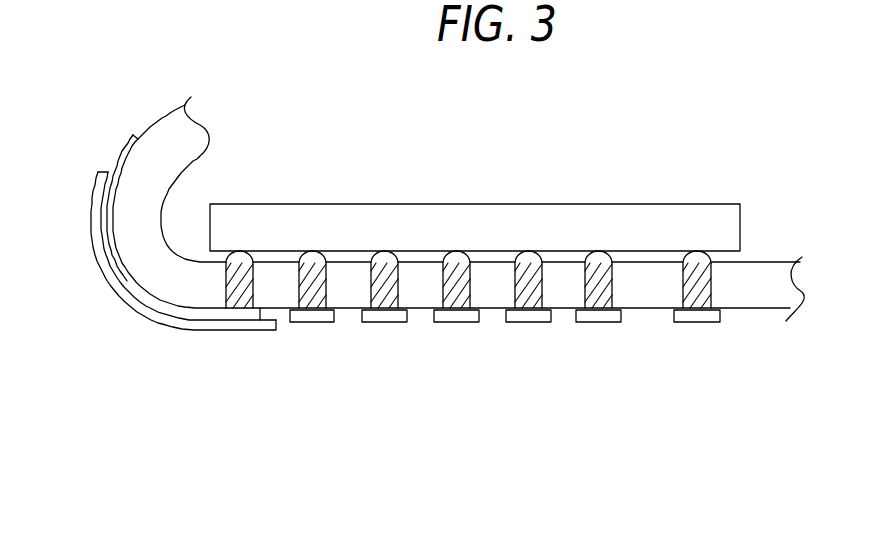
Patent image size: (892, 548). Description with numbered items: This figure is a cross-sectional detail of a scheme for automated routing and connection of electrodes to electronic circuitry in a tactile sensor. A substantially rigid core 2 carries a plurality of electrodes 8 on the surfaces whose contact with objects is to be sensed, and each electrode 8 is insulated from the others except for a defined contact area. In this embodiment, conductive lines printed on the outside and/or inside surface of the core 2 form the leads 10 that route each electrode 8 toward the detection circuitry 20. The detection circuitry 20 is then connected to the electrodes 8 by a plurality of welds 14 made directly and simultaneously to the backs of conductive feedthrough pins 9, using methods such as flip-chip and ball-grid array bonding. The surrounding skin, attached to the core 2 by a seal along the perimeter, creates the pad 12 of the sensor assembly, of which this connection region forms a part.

The core 2 is at (653, 296).
The electrode 8 is at (109, 140).
The conductive feedthrough pin 9 is at (723, 292).
The lead 10 is at (112, 222).
The pad 12 is at (133, 287).
The weld 14 is at (720, 255).
The detection circuitry 20 is at (474, 212).